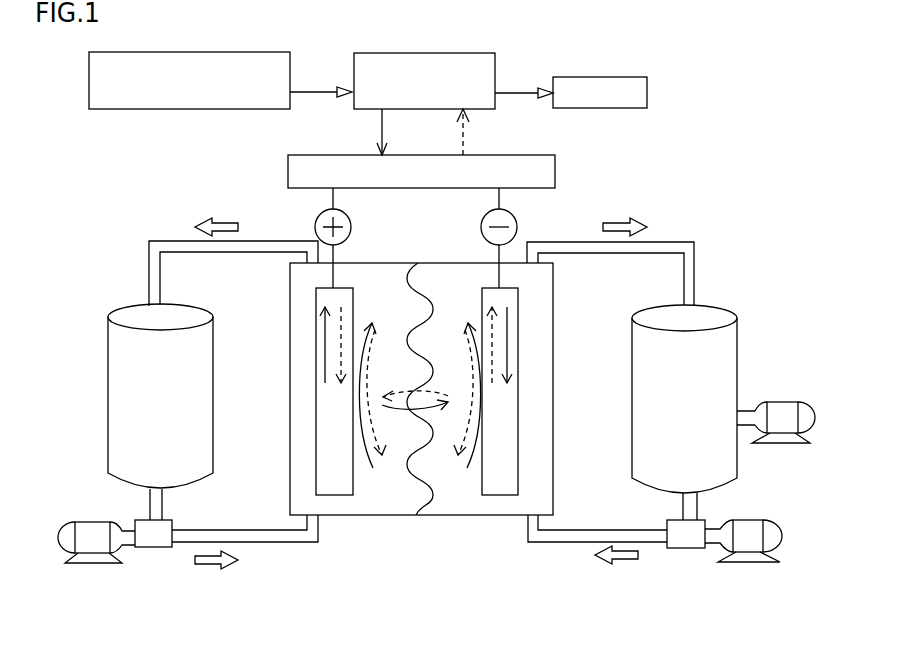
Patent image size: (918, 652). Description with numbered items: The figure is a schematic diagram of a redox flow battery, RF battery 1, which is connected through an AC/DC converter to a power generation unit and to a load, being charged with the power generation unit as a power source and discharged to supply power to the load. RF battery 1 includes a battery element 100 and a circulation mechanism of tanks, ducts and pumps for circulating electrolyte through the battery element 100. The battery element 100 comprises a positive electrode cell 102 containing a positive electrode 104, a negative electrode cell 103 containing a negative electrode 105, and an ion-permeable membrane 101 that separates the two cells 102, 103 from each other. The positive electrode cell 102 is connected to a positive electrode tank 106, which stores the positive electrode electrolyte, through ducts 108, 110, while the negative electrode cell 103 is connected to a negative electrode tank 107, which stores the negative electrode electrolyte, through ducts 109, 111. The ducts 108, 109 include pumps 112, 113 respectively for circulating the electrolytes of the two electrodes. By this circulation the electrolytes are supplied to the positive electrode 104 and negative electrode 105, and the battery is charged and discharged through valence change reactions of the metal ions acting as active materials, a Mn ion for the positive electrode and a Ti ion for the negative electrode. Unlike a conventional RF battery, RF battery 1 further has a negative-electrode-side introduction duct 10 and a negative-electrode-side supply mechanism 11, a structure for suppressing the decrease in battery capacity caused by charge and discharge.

The RF battery 1 is at (739, 189).
The battery element 100 is at (342, 567).
The membrane 101 is at (418, 515).
The positive electrode cell 102 is at (362, 517).
The negative electrode cell 103 is at (483, 517).
The positive electrode 104 is at (316, 440).
The negative electrode 105 is at (518, 420).
The positive electrode tank 106 is at (120, 305).
The negative electrode tank 107 is at (729, 305).
The duct 108 is at (283, 543).
The duct 109 is at (583, 530).
The duct 110 is at (172, 240).
The duct 111 is at (681, 241).
The pump 112 is at (88, 520).
The pump 113 is at (750, 520).
The negative-electrode-side introduction duct 10 is at (742, 410).
The negative-electrode-side supply mechanism 11 is at (797, 402).